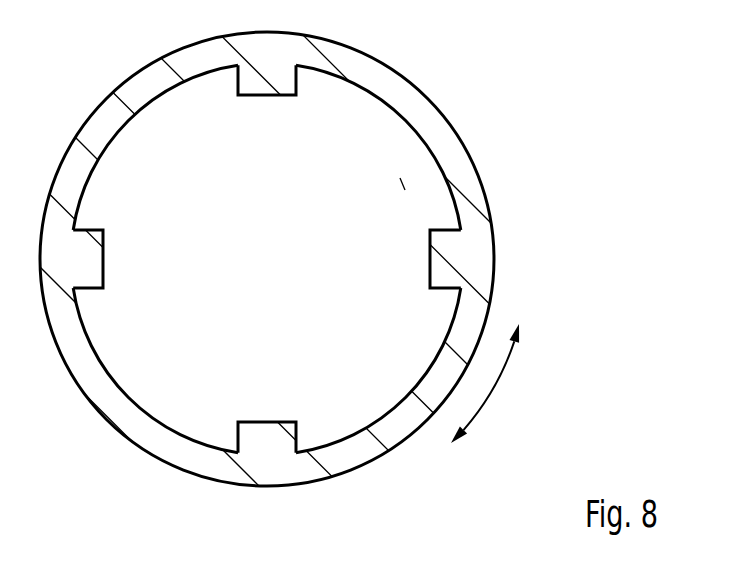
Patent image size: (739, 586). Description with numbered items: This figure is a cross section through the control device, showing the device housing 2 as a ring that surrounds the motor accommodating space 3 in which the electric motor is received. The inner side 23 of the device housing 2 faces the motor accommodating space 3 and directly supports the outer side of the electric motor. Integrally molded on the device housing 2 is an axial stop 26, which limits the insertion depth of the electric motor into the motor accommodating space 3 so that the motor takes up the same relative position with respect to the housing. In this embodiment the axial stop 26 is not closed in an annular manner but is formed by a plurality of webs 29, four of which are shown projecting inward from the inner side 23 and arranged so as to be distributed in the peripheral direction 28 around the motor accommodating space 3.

The device housing 2 is at (453, 113).
The motor accommodating space 3 is at (270, 270).
The inner side 23 is at (405, 190).
The axial stop 26 is at (112, 220).
The peripheral direction 28 is at (493, 390).
The webs 29 is at (267, 88).